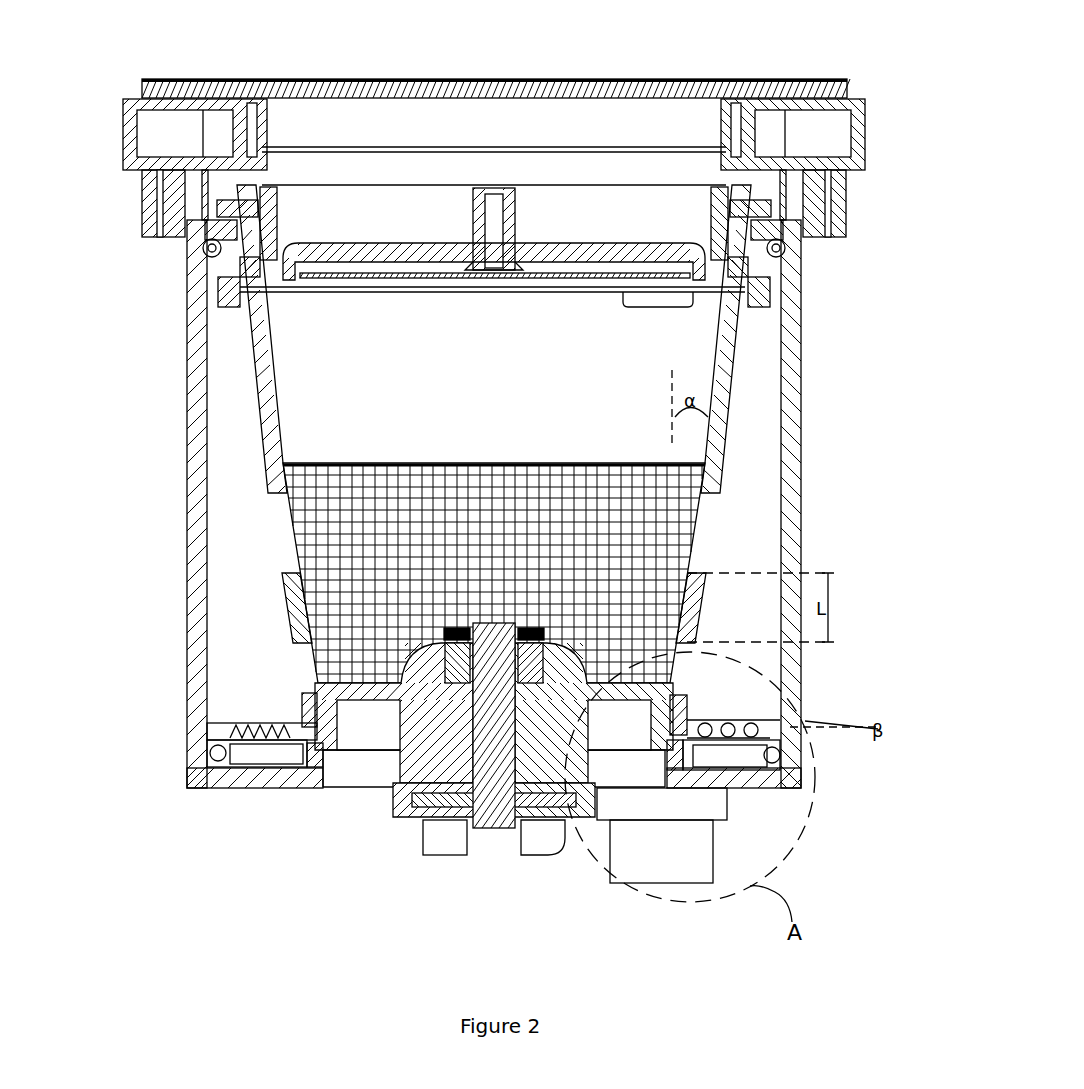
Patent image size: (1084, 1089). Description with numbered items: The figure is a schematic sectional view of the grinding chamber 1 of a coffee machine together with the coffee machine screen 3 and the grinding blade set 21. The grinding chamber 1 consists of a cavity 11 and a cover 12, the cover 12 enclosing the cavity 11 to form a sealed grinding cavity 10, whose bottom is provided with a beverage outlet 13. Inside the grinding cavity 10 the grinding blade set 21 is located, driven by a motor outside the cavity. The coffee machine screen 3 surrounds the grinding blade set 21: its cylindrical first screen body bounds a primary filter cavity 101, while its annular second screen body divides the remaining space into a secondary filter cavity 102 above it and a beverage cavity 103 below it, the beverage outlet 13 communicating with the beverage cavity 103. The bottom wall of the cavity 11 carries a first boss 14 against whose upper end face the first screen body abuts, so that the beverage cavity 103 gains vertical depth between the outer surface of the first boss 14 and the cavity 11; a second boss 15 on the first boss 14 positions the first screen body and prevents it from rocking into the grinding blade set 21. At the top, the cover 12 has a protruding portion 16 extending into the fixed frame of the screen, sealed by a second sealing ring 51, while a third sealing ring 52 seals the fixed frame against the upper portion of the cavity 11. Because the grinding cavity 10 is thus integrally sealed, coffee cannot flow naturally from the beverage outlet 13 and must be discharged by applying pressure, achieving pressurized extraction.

The grinding chamber 1 is at (933, 220).
The cavity 11 is at (800, 365).
The cover 12 is at (745, 76).
The beverage outlet 13 is at (660, 893).
The first boss 14 is at (745, 762).
The second boss 15 is at (757, 705).
The protruding portion 16 is at (273, 250).
The grinding blade set 21 is at (410, 747).
The coffee machine screen 3 is at (712, 480).
The second sealing ring 51 is at (210, 208).
The third sealing ring 52 is at (203, 250).
The grinding cavity 10 is at (83, 423).
The primary filter cavity 101 is at (387, 403).
The secondary filter cavity 102 is at (252, 607).
The beverage cavity 103 is at (263, 757).